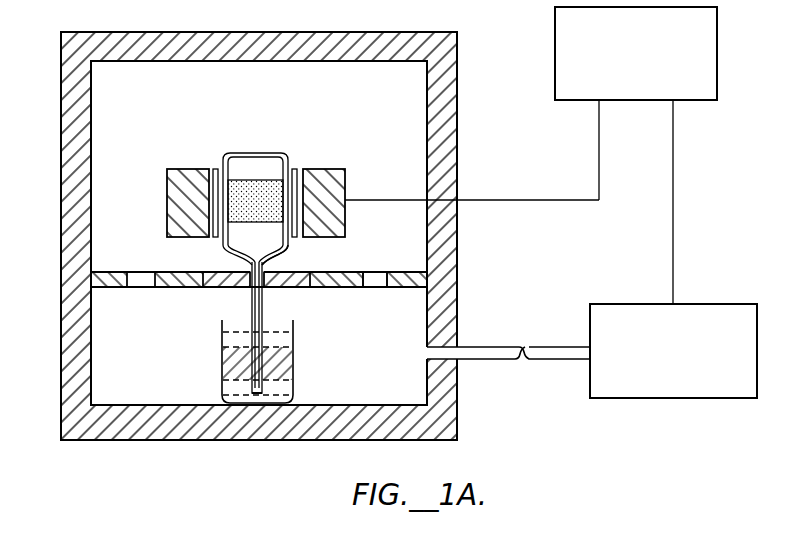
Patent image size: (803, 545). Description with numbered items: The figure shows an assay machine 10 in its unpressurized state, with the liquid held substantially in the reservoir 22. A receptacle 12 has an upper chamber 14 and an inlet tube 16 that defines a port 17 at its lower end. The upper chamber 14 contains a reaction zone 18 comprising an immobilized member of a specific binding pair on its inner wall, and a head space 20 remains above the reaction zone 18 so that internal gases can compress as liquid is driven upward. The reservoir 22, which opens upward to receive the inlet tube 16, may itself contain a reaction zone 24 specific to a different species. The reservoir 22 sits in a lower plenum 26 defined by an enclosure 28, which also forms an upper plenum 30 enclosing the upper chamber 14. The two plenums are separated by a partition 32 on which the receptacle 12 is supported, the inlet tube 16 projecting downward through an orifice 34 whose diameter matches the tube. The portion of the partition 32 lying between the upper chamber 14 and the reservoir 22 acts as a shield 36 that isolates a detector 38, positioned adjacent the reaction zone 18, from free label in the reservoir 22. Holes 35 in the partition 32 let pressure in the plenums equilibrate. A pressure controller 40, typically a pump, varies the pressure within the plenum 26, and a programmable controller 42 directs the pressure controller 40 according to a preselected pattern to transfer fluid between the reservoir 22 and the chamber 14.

The assay machine 10 is at (78, 25).
The receptacle 12 is at (268, 135).
The upper chamber 14 is at (226, 152).
The inlet tube 16 is at (251, 305).
The port 17 is at (264, 397).
The reaction zone 18 is at (281, 246).
The head space 20 is at (279, 155).
The reservoir 22 is at (296, 347).
The reaction zone 24 is at (284, 361).
The plenum 26 is at (130, 392).
The enclosure 28 is at (458, 250).
The upper plenum 30 is at (400, 112).
The partition 32 is at (382, 287).
The orifice 34 is at (263, 283).
The holes 35 is at (132, 288).
The shield 36 is at (215, 288).
The detector 38 is at (176, 203).
The pressure controller 40 is at (728, 304).
The programmable controller 42 is at (717, 25).